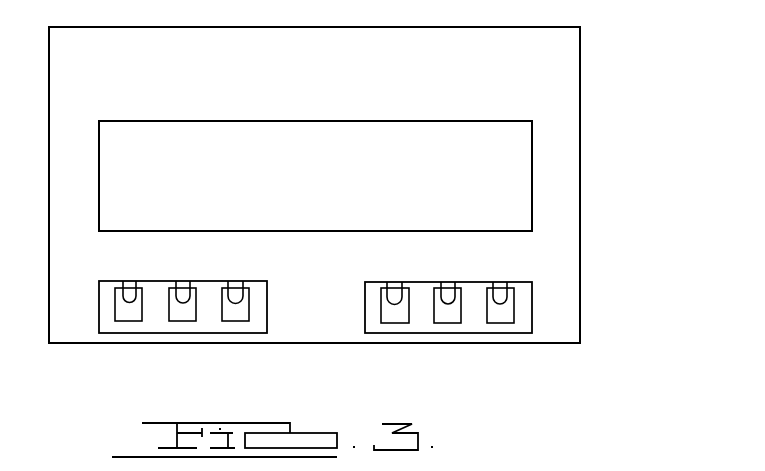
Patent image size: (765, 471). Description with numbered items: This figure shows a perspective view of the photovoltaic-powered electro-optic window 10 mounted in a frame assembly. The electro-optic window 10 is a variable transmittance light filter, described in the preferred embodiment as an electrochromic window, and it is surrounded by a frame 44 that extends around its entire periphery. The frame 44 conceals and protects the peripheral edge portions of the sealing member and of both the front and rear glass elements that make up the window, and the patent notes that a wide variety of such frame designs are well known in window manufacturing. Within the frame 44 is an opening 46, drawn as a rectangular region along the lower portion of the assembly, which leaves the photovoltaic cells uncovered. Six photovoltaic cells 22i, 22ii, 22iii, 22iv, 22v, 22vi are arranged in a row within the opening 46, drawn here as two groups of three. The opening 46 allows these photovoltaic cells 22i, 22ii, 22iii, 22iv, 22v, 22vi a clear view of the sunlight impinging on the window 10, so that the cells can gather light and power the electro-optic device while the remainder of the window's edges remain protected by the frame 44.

The frame 44 is at (572, 89).
The electro-optic window 10 is at (298, 189).
The opening 46 is at (523, 301).
The photovoltaic cell 22vi is at (124, 318).
The photovoltaic cell 22v is at (181, 318).
The photovoltaic cell 22iv is at (237, 318).
The photovoltaic cell 22iii is at (395, 318).
The photovoltaic cell 22ii is at (450, 318).
The photovoltaic cell 22i is at (508, 318).